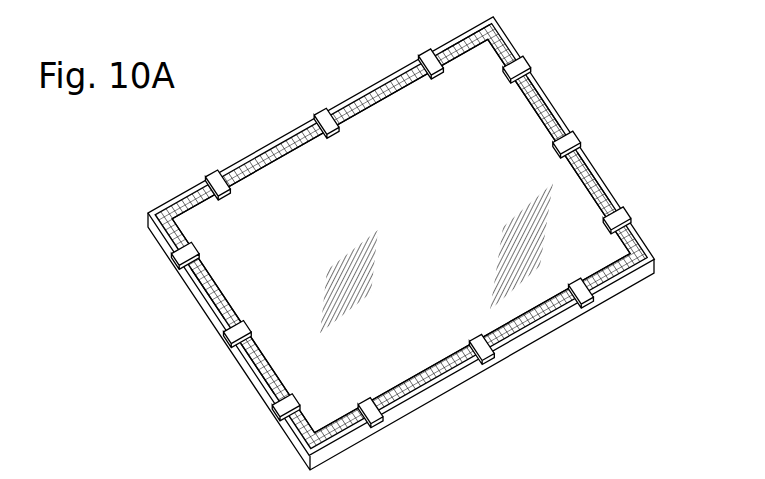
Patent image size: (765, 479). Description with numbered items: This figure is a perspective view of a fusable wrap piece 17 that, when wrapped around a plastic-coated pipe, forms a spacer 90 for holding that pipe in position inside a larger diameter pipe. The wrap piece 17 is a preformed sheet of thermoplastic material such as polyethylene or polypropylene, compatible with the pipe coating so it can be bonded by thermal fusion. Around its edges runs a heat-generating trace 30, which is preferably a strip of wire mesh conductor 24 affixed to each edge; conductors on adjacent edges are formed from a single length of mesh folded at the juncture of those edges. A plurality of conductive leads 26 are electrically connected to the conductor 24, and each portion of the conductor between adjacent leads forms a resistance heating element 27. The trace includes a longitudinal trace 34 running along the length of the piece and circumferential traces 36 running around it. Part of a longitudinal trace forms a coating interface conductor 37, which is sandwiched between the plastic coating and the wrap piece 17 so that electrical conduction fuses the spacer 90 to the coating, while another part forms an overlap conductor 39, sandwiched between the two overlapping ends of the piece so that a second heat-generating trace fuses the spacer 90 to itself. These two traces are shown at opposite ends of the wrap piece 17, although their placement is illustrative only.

The wrap piece 17 is at (290, 445).
The wire mesh conductor 24 is at (603, 178).
The conductive leads 26 is at (320, 117).
The resistance heating element 27 is at (243, 368).
The heat-generating trace 30 is at (190, 188).
The longitudinal trace 34 is at (263, 147).
The circumferential trace 36 is at (550, 98).
The coating interface conductor 37 is at (607, 285).
The overlap conductor 39 is at (457, 43).
The spacer 90 is at (387, 127).